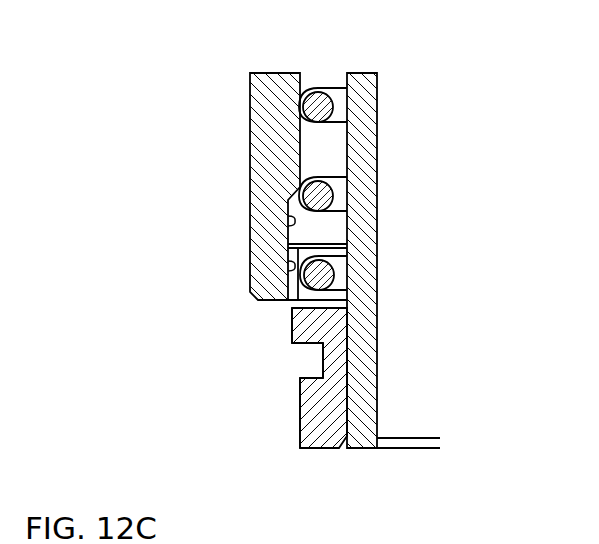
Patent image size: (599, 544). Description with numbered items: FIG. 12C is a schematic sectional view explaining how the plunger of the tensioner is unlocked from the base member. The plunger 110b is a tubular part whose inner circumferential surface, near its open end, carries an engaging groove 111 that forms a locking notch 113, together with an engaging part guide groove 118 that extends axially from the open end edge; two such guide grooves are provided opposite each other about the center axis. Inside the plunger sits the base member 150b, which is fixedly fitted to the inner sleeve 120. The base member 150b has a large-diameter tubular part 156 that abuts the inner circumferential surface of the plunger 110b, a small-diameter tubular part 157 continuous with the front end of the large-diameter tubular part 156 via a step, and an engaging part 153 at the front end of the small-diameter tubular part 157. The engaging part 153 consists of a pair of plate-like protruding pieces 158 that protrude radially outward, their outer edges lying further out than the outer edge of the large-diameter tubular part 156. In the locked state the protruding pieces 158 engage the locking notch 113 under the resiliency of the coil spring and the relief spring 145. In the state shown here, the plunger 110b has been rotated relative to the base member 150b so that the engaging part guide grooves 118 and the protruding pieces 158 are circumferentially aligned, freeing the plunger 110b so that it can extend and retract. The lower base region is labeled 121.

The first housing member 110b is at (244, 80).
The second housing member 120 is at (342, 152).
The O-ring seal 145 is at (336, 88).
The seal holder 118 is at (290, 270).
The seal surface 113 is at (309, 242).
The packing 111 is at (290, 224).
The gap 153 is at (285, 312).
The lower housing member 150b is at (293, 454).
The upper step portion 158 is at (292, 327).
The recessed portion 157 is at (323, 362).
The lower step portion 156 is at (300, 415).
The base plate 121 is at (365, 442).